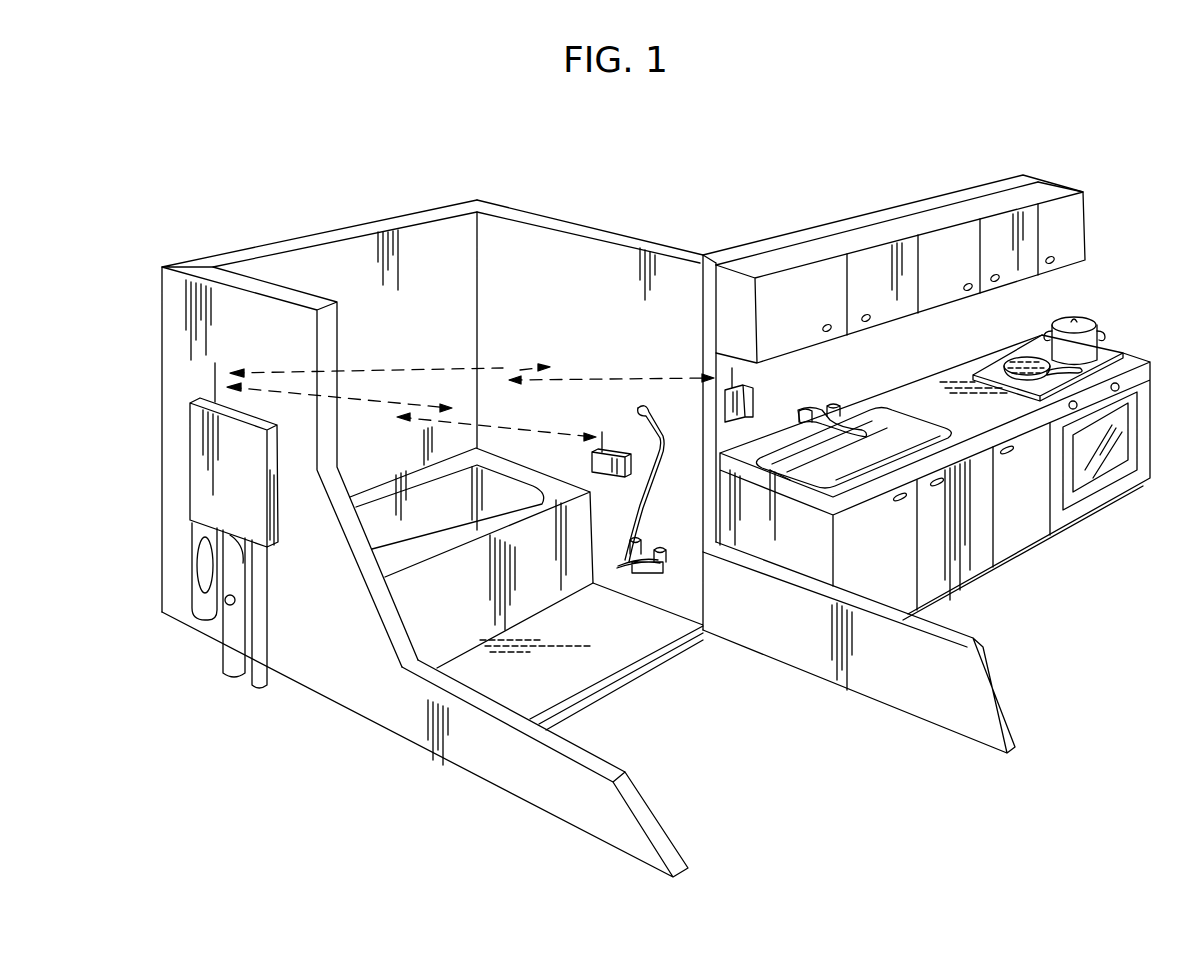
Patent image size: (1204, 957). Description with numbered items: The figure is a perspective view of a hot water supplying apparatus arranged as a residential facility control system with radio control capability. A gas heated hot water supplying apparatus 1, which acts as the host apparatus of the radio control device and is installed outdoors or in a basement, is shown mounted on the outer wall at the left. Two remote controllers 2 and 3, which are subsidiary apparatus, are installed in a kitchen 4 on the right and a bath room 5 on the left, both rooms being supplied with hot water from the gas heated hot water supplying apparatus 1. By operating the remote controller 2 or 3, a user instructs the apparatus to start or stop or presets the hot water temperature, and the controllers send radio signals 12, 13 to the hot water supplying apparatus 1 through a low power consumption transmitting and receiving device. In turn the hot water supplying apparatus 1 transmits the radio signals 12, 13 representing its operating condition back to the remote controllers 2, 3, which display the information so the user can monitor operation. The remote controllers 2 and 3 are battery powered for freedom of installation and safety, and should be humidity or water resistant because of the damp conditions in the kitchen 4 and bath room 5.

The gas heated hot water supplying apparatus 1 is at (203, 450).
The remote controller 2 is at (753, 401).
The remote controller 3 is at (592, 461).
The kitchen 4 is at (884, 203).
The bath room 5 is at (362, 224).
The radio signal 12 is at (580, 378).
The radio signal 13 is at (370, 402).